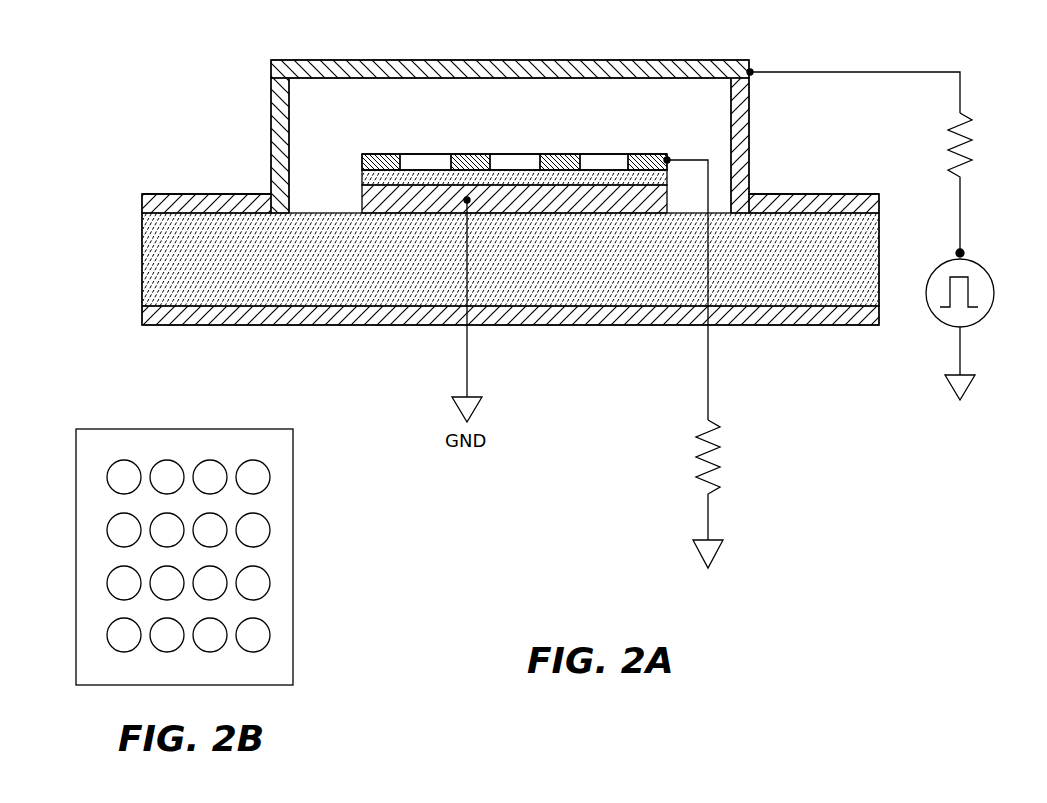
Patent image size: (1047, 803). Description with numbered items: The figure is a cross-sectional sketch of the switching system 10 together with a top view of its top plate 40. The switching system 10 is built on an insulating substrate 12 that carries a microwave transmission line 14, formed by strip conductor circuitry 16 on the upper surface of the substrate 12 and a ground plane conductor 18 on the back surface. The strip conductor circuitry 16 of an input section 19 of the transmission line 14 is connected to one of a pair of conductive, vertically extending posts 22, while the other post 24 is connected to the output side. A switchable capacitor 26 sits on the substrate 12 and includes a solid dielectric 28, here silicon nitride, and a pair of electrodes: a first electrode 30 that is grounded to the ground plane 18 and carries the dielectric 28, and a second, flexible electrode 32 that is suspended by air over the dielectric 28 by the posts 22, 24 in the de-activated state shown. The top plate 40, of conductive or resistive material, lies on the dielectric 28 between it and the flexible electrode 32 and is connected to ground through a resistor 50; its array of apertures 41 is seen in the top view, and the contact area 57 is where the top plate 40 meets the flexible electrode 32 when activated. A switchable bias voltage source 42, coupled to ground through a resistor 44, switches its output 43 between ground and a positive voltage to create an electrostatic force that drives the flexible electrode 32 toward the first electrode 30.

In FIG. 2A, the switching system 10 is at (757, 45).
In FIG. 2A, the insulating substrate 12 is at (142, 262).
In FIG. 2A, the microwave transmission line 14 is at (190, 148).
In FIG. 2A, the strip conductor circuitry 16 is at (142, 207).
In FIG. 2A, the ground plane conductor 18 is at (230, 326).
In FIG. 2A, the input section 19 is at (232, 190).
In FIG. 2A, the conductive vertically extending post 22 is at (276, 98).
In FIG. 2A, the conductive vertically extending post 24 is at (745, 115).
In FIG. 2A, the switchable capacitor 26 is at (382, 60).
In FIG. 2A, the solid dielectric 28 is at (362, 175).
In FIG. 2A, the first electrode 30 is at (362, 200).
In FIG. 2A, the second flexible electrode 32 is at (712, 80).
In FIG. 2A, the top plate 40 is at (392, 152).
In FIG. 2B, the top plate 40 is at (157, 676).
In FIG. 2A, the apertures 41 is at (425, 152).
In FIG. 2B, the apertures 41 is at (253, 475).
In FIG. 2A, the bias voltage source 42 is at (994, 291).
In FIG. 2A, the output 43 is at (966, 253).
In FIG. 2A, the resistor 44 is at (972, 158).
In FIG. 2A, the resistor 50 is at (722, 467).
In FIG. 2A, the contact area 57 is at (368, 152).